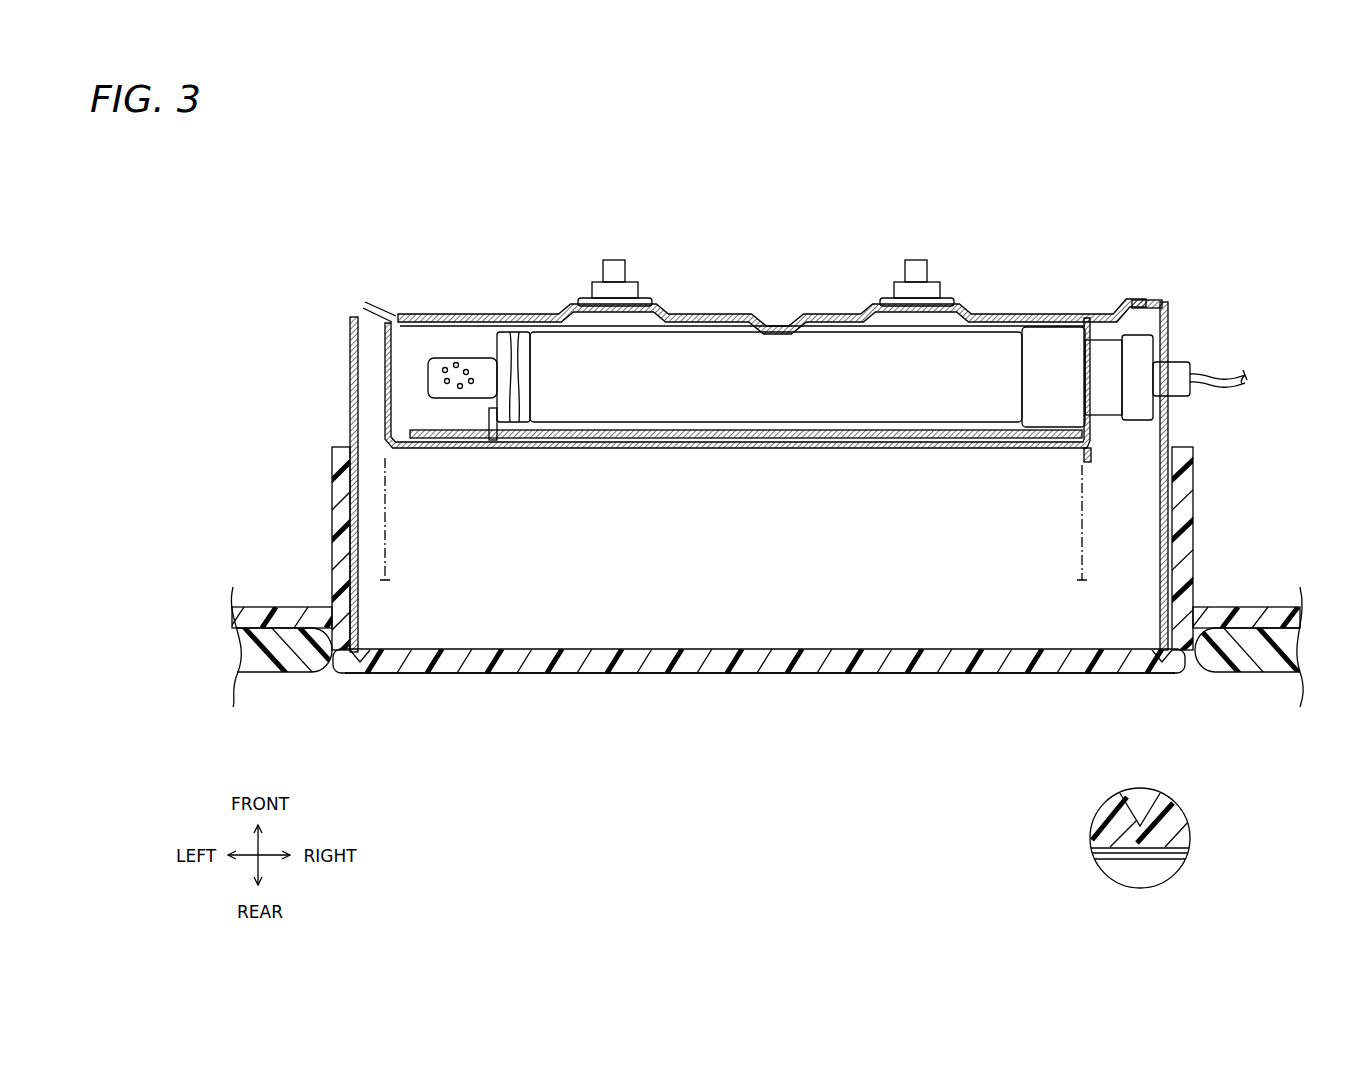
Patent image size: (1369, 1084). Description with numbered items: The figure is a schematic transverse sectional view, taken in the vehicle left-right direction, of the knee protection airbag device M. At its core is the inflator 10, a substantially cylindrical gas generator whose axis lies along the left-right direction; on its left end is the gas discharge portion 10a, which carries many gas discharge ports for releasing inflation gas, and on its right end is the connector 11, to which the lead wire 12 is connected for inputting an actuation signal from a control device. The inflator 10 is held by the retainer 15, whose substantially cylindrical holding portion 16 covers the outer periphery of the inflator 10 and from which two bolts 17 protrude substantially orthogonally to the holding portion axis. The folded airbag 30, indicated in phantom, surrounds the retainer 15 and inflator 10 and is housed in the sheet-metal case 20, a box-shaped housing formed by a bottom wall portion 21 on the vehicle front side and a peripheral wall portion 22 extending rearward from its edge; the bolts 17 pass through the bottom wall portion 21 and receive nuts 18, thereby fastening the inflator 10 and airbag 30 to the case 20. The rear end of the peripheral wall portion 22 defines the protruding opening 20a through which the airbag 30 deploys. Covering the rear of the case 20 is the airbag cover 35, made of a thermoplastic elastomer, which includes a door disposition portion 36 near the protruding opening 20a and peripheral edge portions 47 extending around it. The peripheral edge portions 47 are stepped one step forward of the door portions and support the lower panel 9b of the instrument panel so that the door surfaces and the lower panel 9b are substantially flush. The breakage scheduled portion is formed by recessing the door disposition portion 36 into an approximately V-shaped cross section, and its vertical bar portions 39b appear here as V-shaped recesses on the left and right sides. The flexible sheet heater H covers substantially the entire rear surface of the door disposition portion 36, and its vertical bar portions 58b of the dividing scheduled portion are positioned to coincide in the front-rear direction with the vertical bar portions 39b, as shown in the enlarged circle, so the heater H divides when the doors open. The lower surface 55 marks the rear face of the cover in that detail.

The case 20 is at (342, 355).
The peripheral wall portion 22 is at (342, 408).
The protruding opening 20a is at (615, 545).
The door disposition portion 36 is at (765, 673).
The heater H is at (930, 676).
The vertical bar portion 39b is at (368, 645).
The peripheral edge portion 47 is at (268, 615).
The lower panel 9b is at (1268, 674).
The airbag cover 35 is at (322, 680).
The lower surface 55 is at (1097, 674).
The vertical bar portion 58b is at (1185, 843).
The bottom wall portion 21 is at (705, 308).
The bolt 17 is at (615, 262).
The nut 18 is at (640, 290).
The retainer 15 is at (697, 449).
The holding portion 16 is at (738, 438).
The inflator 10 is at (792, 425).
The gas discharge portion 10a is at (477, 396).
The connector 11 is at (1178, 362).
The lead wire 12 is at (1233, 387).
The airbag device M is at (1172, 242).
The airbag 30 is at (1082, 522).